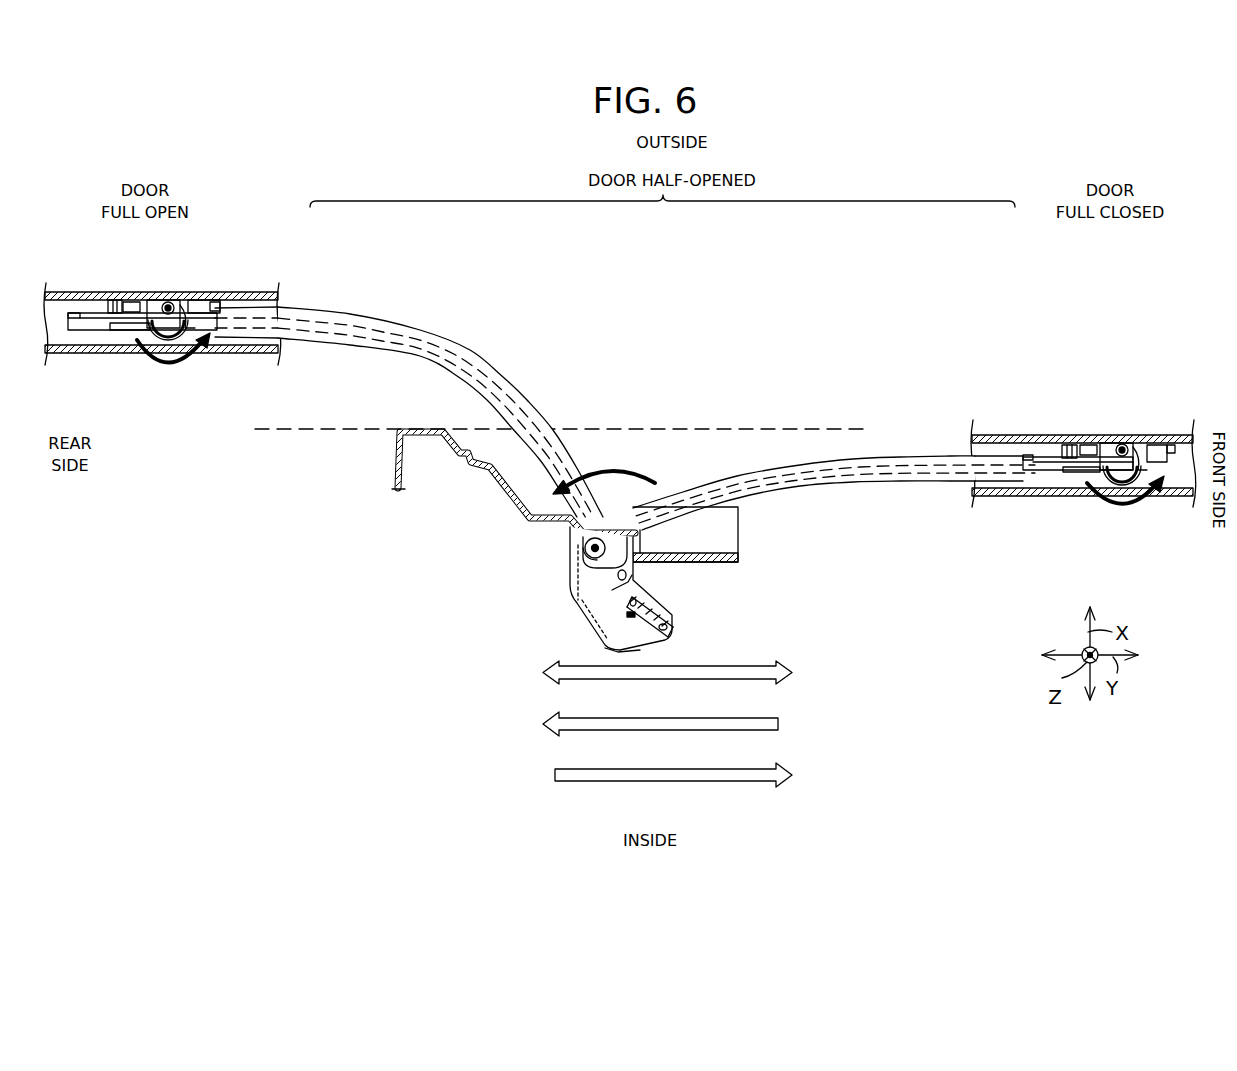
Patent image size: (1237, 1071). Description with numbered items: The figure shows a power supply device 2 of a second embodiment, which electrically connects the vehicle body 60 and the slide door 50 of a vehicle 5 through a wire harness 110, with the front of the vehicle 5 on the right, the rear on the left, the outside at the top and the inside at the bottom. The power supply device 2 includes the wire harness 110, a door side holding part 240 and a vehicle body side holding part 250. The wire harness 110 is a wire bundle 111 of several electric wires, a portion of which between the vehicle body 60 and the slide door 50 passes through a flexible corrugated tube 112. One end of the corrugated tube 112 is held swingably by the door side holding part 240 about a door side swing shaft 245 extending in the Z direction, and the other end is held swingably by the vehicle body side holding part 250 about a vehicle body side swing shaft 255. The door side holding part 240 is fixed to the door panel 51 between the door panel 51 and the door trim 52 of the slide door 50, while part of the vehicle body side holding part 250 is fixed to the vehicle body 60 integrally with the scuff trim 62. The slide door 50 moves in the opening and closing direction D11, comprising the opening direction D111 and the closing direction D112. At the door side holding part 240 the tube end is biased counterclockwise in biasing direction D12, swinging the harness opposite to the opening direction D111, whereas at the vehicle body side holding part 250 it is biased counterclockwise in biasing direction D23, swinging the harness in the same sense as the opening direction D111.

The power supply device 2 is at (222, 535).
The vehicle 5 is at (307, 540).
The slide door 50 is at (620, 408).
The door panel 51 is at (215, 300).
The door trim 52 is at (116, 353).
The vehicle body 60 is at (735, 428).
The scuff trim 62 is at (740, 530).
The wire harness 110 is at (625, 417).
The wire bundle 111 is at (385, 342).
The corrugated tube 112 is at (492, 370).
The door side holding part 240 is at (630, 362).
The door side swing shaft 245 is at (168, 302).
The vehicle body side holding part 250 is at (576, 589).
The vehicle body side swing shaft 255 is at (583, 549).
The opening and closing direction D11 is at (667, 681).
The opening direction D111 is at (660, 733).
The closing direction D112 is at (673, 785).
The biasing direction D12 is at (168, 364).
The biasing direction D23 is at (607, 473).